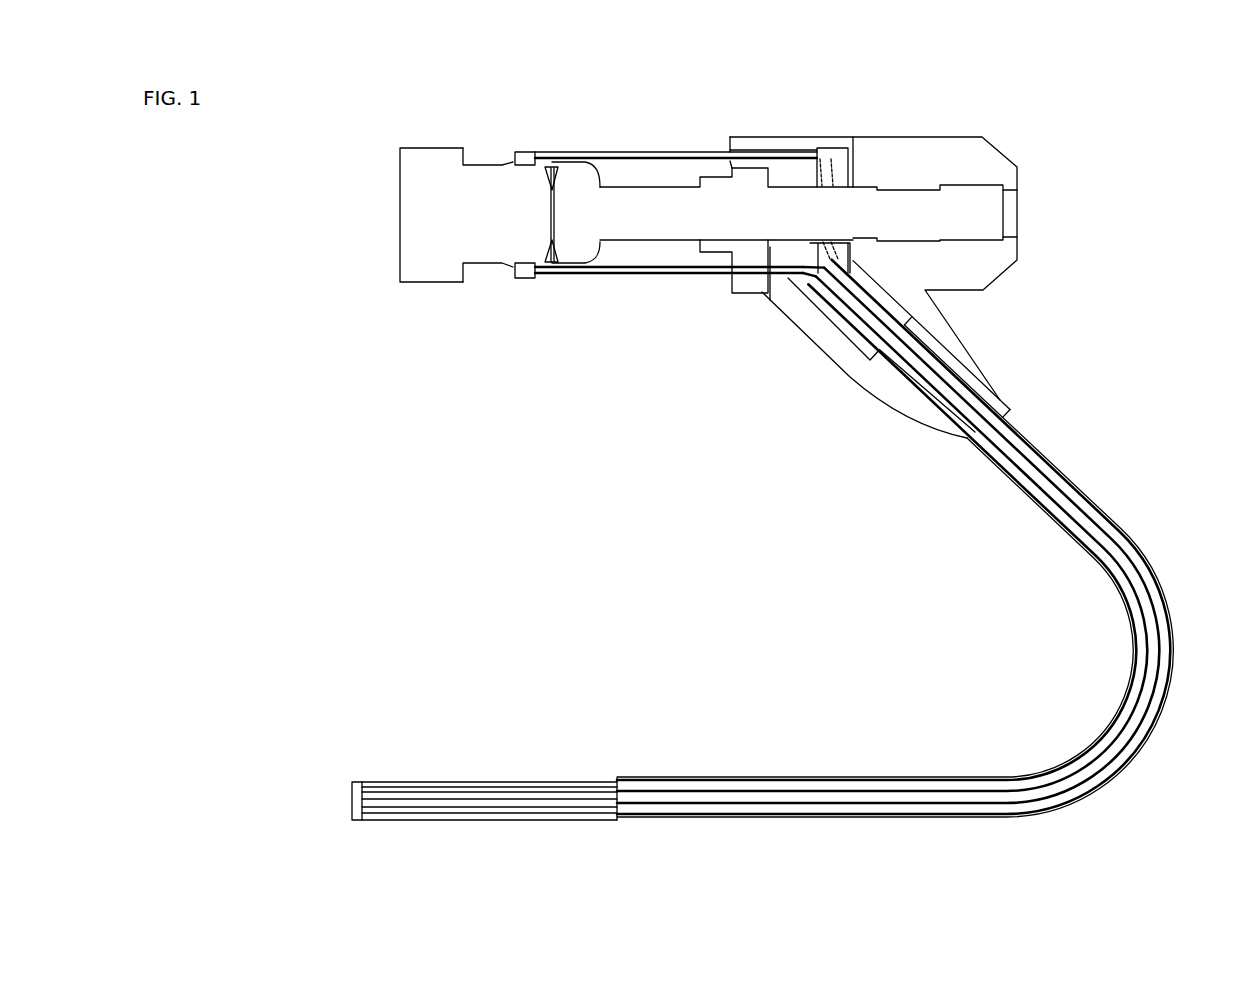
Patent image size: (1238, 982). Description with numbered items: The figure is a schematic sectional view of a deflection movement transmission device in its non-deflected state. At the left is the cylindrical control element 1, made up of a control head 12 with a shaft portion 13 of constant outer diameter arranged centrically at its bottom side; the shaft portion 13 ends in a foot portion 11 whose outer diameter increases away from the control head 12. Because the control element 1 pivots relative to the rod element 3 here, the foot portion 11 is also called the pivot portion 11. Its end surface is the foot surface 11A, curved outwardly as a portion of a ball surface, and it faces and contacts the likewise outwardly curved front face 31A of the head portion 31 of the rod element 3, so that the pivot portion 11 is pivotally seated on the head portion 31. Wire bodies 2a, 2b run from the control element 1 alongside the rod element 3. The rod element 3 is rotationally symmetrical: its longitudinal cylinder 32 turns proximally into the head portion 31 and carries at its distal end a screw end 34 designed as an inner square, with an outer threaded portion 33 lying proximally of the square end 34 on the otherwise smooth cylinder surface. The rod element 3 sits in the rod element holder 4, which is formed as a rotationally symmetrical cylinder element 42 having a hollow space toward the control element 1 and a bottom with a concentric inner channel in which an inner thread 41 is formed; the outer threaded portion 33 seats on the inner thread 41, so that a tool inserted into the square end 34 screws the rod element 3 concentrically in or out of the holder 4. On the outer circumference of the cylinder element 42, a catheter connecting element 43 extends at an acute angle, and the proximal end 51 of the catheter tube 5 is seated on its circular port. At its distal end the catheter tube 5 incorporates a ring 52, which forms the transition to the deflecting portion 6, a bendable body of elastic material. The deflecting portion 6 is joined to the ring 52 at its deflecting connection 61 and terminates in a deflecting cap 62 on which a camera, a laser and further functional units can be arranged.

The control element 1 is at (443, 214).
The control head 12 is at (433, 162).
The shaft portion 13 is at (478, 177).
The wire body 2a is at (630, 153).
The wire body 2b is at (620, 272).
The foot portion (pivot portion) 11 is at (498, 253).
The foot surface 11A is at (548, 178).
The head portion 31 is at (581, 232).
The front face 31A is at (552, 172).
The longitudinal cylinder 32 is at (676, 206).
The rod element 3 is at (835, 198).
The rod element holder 4 is at (897, 252).
The inner thread 41 is at (915, 180).
The cylinder element 42 is at (808, 150).
The catheter connecting element 43 is at (930, 415).
The outer threaded portion 33 is at (917, 235).
The screw end (square end) 34 is at (990, 195).
The catheter tube 5 is at (903, 563).
The proximal end 51 is at (997, 410).
The ring 52 is at (625, 822).
The deflecting portion 6 is at (473, 760).
The deflecting connection 61 is at (618, 780).
The deflecting cap 62 is at (357, 800).